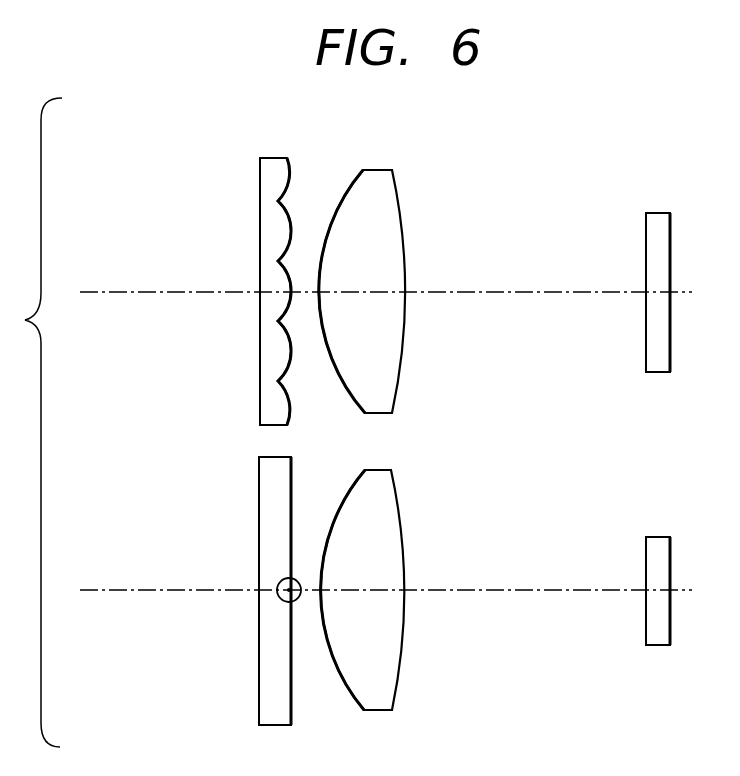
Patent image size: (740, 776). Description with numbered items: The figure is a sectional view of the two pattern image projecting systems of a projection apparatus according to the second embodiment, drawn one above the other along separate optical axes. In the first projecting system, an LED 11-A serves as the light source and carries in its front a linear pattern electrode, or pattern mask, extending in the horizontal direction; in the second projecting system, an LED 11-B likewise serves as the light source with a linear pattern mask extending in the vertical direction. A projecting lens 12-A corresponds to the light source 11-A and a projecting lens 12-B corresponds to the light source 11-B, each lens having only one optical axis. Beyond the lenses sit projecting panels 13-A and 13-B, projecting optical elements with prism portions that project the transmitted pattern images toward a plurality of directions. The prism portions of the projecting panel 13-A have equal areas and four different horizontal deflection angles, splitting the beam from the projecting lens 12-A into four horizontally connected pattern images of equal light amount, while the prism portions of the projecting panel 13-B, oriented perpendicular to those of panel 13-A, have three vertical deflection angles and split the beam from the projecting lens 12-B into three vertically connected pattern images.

The LED 11-A is at (660, 374).
The LED 11-B is at (660, 647).
The projecting lens 12-A is at (397, 394).
The projecting lens 12-B is at (396, 692).
The projecting panel 13-A is at (270, 157).
The projecting panel 13-B is at (258, 695).